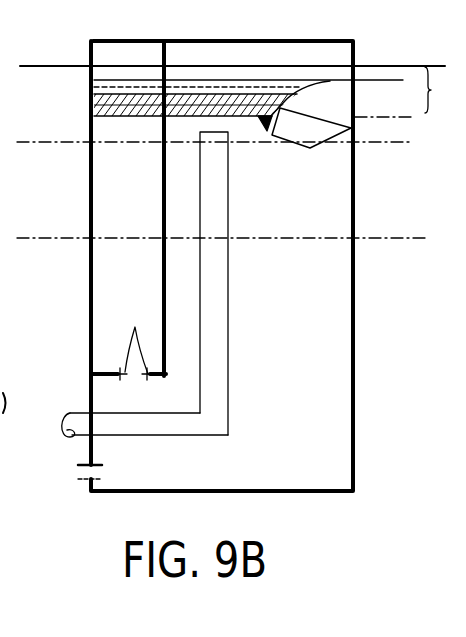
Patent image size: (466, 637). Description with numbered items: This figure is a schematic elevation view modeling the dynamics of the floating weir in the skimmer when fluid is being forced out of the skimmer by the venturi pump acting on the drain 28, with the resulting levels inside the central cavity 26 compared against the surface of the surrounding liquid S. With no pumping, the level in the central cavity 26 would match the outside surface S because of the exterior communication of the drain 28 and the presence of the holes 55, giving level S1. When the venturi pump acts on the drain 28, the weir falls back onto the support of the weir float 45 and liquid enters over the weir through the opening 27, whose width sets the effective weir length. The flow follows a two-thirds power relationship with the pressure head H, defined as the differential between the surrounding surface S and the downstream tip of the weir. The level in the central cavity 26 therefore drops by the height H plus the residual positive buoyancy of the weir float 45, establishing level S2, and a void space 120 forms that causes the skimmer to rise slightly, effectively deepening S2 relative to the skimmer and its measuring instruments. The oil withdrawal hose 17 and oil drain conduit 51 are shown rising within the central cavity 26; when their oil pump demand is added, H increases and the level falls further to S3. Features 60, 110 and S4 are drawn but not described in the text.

The oil withdrawal hose 17 is at (62, 418).
The central cavity 26 is at (322, 310).
The opening 27 is at (358, 102).
The drain 28 is at (85, 472).
The weir float 45 is at (317, 128).
The oil drain conduit 51 is at (213, 131).
The holes 55 is at (129, 337).
The liquid region 60 is at (265, 187).
The film layer 110 is at (403, 83).
The void space 120 is at (89, 103).
The pressure head H is at (440, 90).
The surface of the surrounding liquid S is at (382, 66).
The liquid level with no pumping S1 is at (231, 40).
The liquid level under water pump demand S2 is at (84, 117).
The liquid level under added oil pump demand S3 is at (80, 143).
The fourth surface level S4 is at (120, 238).